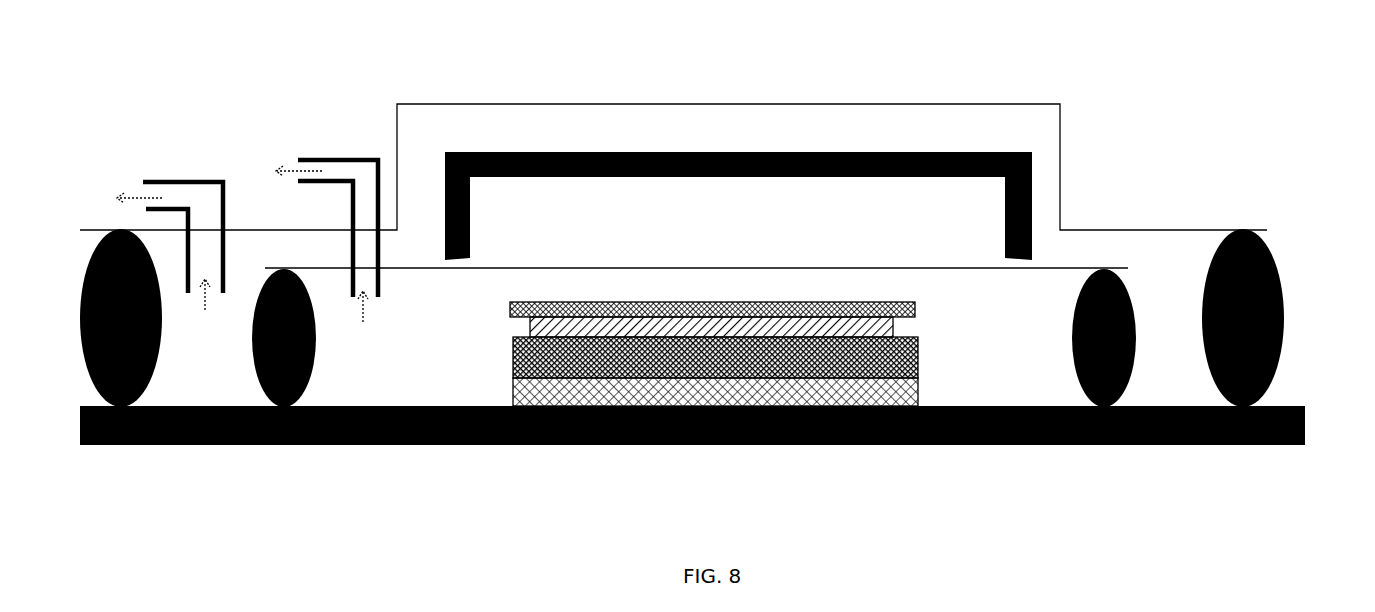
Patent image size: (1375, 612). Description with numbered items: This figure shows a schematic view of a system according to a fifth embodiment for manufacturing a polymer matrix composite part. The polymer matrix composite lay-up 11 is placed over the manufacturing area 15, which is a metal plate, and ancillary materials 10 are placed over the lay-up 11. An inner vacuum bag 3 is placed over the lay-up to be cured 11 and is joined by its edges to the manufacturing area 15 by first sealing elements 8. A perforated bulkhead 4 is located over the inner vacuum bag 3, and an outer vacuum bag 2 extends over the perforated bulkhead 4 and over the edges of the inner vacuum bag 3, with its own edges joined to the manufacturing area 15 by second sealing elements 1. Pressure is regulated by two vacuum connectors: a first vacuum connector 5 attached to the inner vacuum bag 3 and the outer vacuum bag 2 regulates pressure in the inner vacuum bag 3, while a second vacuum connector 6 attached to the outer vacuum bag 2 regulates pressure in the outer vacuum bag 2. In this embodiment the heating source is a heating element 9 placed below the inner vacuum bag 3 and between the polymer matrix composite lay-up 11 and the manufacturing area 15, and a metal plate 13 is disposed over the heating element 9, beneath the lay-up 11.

The second sealing elements 1 is at (84, 362).
The outer vacuum bag 2 is at (633, 104).
The inner vacuum bag 3 is at (1040, 266).
The perforated bulkhead 4 is at (882, 152).
The first vacuum connector 5 is at (318, 158).
The second vacuum connector 6 is at (173, 182).
The first sealing elements 8 is at (262, 442).
The heating element 9 is at (512, 392).
The ancillary materials 10 is at (917, 304).
The polymer matrix composite lay-up 11 is at (895, 327).
The metal plate 13 is at (512, 358).
The manufacturing area 15 is at (985, 445).